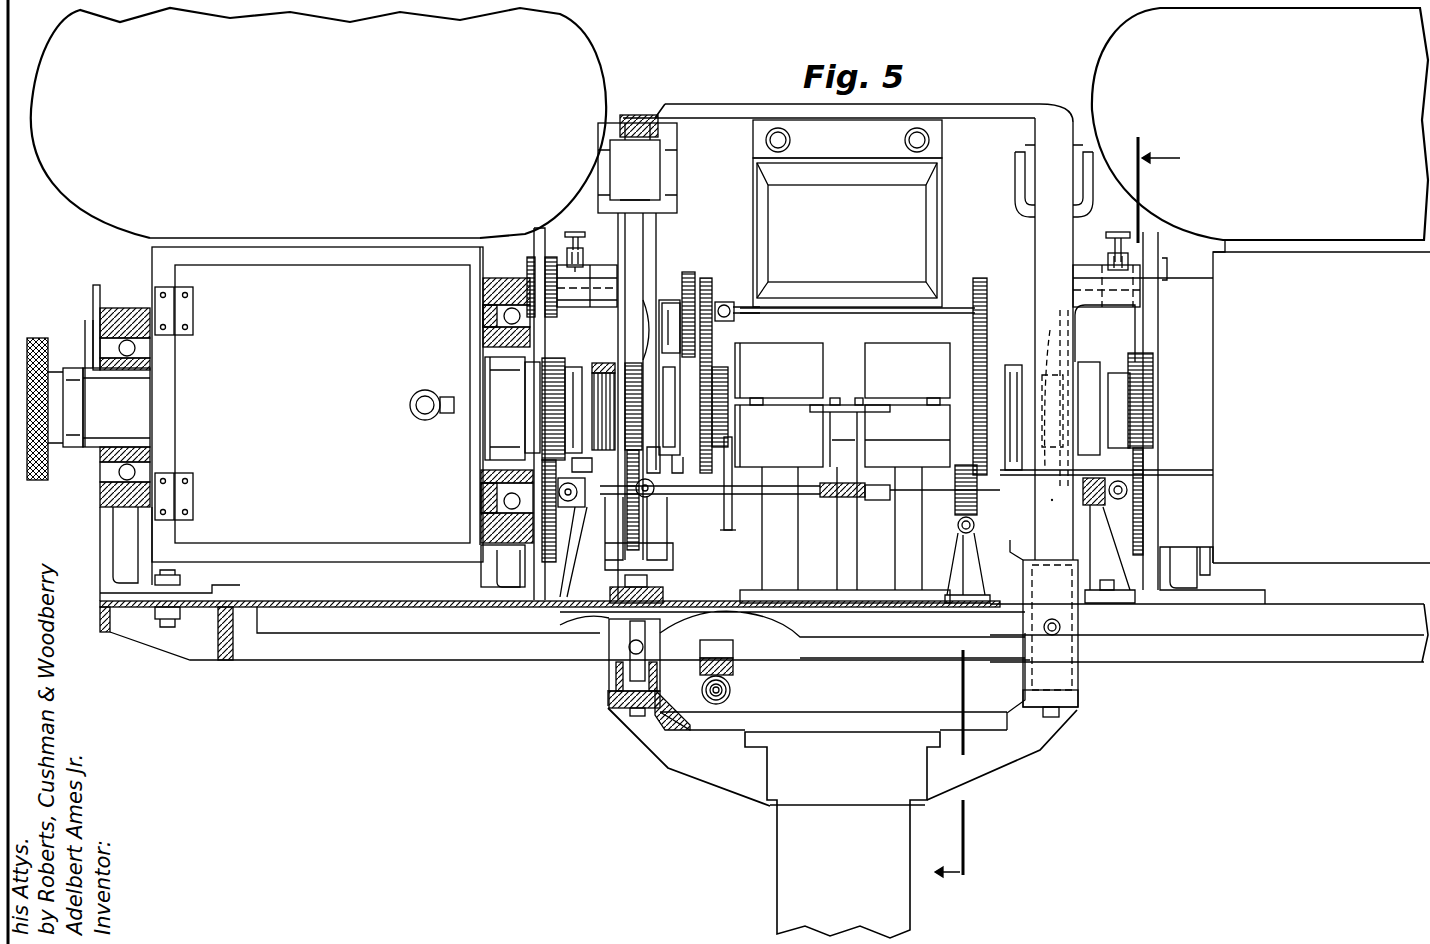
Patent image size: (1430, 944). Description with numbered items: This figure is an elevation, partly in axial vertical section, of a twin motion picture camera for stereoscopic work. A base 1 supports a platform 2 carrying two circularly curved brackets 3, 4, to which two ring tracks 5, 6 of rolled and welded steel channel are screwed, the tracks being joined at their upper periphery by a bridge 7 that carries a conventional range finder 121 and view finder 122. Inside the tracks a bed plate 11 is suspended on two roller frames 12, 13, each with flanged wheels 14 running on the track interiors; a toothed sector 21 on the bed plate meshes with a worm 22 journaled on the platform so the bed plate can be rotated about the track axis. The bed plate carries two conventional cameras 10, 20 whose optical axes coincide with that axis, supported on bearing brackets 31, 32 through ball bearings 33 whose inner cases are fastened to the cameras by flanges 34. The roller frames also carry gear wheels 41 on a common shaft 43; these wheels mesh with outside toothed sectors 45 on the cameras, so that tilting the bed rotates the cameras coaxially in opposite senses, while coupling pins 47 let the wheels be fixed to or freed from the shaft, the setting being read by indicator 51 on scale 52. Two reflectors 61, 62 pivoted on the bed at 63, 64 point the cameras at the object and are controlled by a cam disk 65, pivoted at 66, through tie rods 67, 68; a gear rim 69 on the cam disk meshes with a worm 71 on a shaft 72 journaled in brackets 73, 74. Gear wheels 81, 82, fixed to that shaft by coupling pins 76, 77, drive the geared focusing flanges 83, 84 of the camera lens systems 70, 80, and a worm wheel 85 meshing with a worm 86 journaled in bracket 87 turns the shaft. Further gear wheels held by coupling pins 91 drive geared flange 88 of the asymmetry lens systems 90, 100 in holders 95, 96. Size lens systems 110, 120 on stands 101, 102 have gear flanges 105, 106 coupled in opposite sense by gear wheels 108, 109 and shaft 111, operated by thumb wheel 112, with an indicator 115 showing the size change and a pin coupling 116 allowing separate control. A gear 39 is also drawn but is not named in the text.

The base 1 is at (893, 850).
The platform 2 is at (935, 712).
The circularly curved bracket 3 is at (606, 680).
The circularly curved bracket 4 is at (1080, 700).
The ring track 5 is at (615, 657).
The ring track 6 is at (38, 254).
The bridge 7 is at (920, 108).
The motion picture camera 10 is at (316, 400).
The bed plate 11 is at (222, 638).
The roller frame 12 is at (637, 406).
The roller frame 13 is at (1015, 206).
The flanged wheel 14 is at (670, 145).
The motion picture camera 20 is at (1321, 401).
The toothed sector 21 is at (735, 668).
The worm 22 is at (731, 692).
The bearing bracket 31 is at (125, 557).
The bearing bracket 32 is at (503, 566).
The ball bearing 33 is at (500, 487).
The flange 34 is at (502, 501).
The gear 39 is at (632, 363).
The gear wheel 41 is at (527, 262).
The common shaft 43 is at (596, 290).
The outside toothed sector 45 is at (543, 228).
The coupling pin 47 is at (583, 244).
The indicator 51 is at (85, 324).
The scale 52 is at (93, 303).
The reflector 61 is at (779, 370).
The reflector 62 is at (907, 370).
The pivot 63 is at (732, 494).
The pivot 64 is at (958, 527).
The cam disk 65 is at (848, 405).
The pivot 66 is at (842, 450).
The tie rod 67 is at (779, 436).
The tie rod 68 is at (907, 436).
The gear rim 69 is at (876, 502).
The camera lens system 70 is at (512, 408).
The worm 71 is at (828, 500).
The shaft 72 is at (722, 498).
The bracket 73 is at (576, 552).
The bracket 74 is at (1120, 580).
The coupling pin 76 is at (569, 501).
The coupling pin 77 is at (1128, 490).
The camera lens system 80 is at (1150, 402).
The gear wheel 81 is at (552, 562).
The gear wheel 82 is at (1143, 525).
The geared focusing flange 83 is at (562, 357).
The geared focusing flange 84 is at (1153, 360).
The worm wheel 85 is at (975, 510).
The worm 86 is at (962, 530).
The bracket 87 is at (958, 575).
The geared flange 88 is at (1138, 336).
The asymmetry lens system 90 is at (637, 421).
The coupling pin 91 is at (655, 492).
The holder 95 is at (611, 461).
The holder 96 is at (1140, 468).
The asymmetry lens system 100 is at (1056, 400).
The stand 101 is at (680, 457).
The stand 102 is at (1005, 460).
The gear flange 105 is at (740, 388).
The gear flange 106 is at (945, 388).
The gear wheel 108 is at (708, 278).
The gear wheel 109 is at (990, 268).
The size lens system 110 is at (745, 336).
The shaft 111 is at (845, 313).
The thumb wheel 112 is at (690, 268).
The indicator 115 is at (667, 300).
The pin coupling 116 is at (727, 302).
The size lens system 120 is at (960, 440).
The range finder 121 is at (847, 139).
The view finder 122 is at (847, 232).